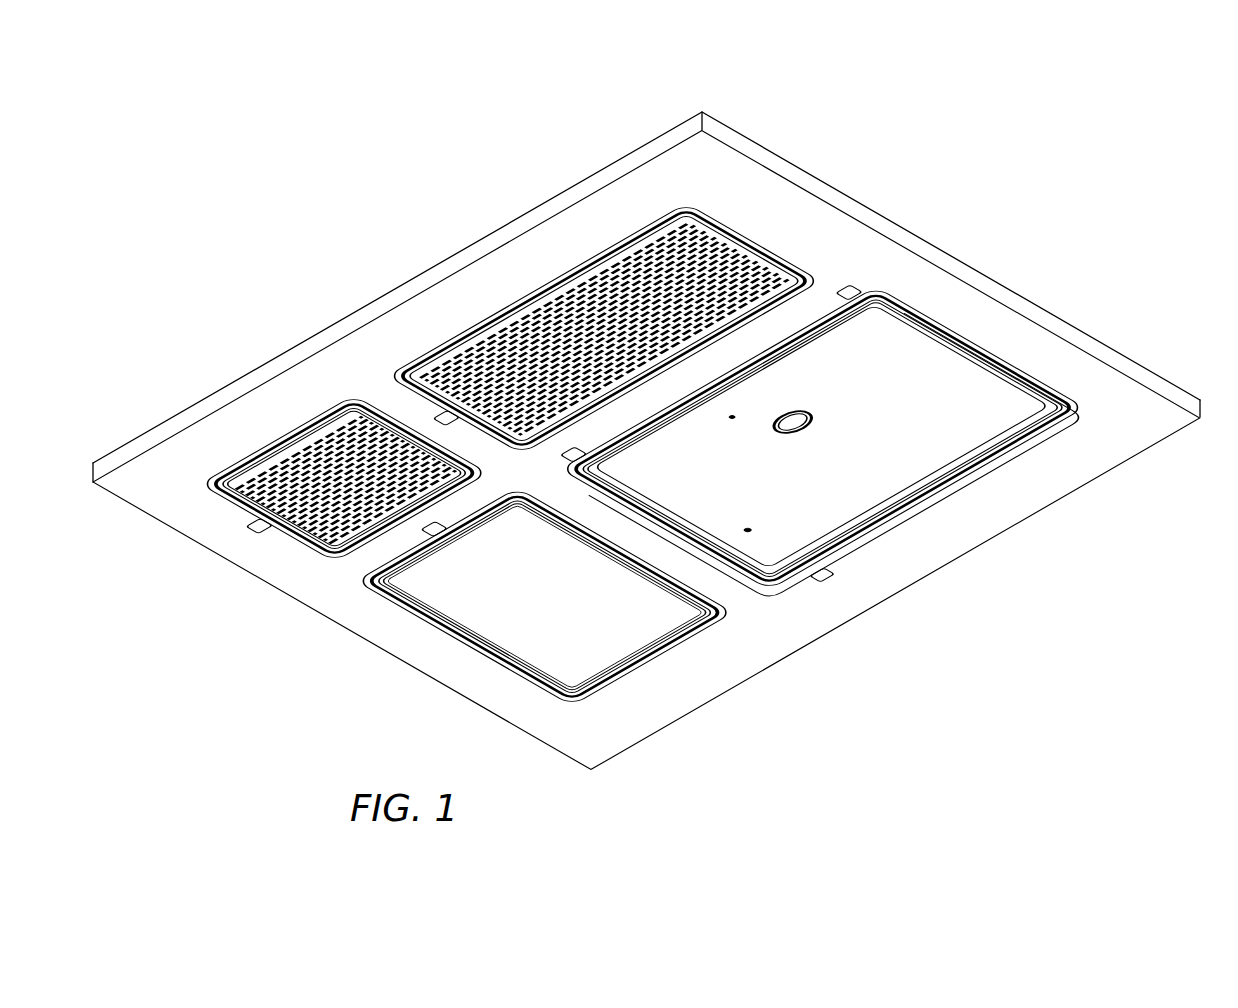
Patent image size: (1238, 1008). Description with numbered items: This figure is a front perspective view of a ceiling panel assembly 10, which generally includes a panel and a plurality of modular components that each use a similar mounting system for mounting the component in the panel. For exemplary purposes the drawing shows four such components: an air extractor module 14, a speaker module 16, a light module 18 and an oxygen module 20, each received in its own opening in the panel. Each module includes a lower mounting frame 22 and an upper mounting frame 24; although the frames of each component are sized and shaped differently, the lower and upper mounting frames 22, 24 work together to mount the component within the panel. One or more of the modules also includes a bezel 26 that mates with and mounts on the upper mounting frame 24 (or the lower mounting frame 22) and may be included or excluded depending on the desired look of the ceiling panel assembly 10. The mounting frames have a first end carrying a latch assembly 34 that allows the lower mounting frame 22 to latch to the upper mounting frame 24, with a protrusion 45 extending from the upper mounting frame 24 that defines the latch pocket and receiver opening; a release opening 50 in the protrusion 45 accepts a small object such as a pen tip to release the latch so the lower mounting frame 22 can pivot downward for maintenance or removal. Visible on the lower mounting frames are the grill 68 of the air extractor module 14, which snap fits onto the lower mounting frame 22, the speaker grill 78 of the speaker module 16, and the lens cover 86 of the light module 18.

The ceiling panel assembly 10 is at (646, 417).
The air extractor module 14 is at (603, 291).
The speaker module 16 is at (344, 425).
The light module 18 is at (551, 626).
The oxygen module 20 is at (823, 420).
The lower mounting frame 22 is at (243, 478).
The upper mounting frame 24 is at (1090, 407).
The bezel 26 is at (442, 338).
The latch assembly 34 is at (862, 505).
The protrusion 45 is at (447, 418).
The release opening 50 is at (848, 292).
The grill 68 is at (523, 308).
The speaker grill 78 is at (245, 488).
The lens cover 86 is at (562, 611).